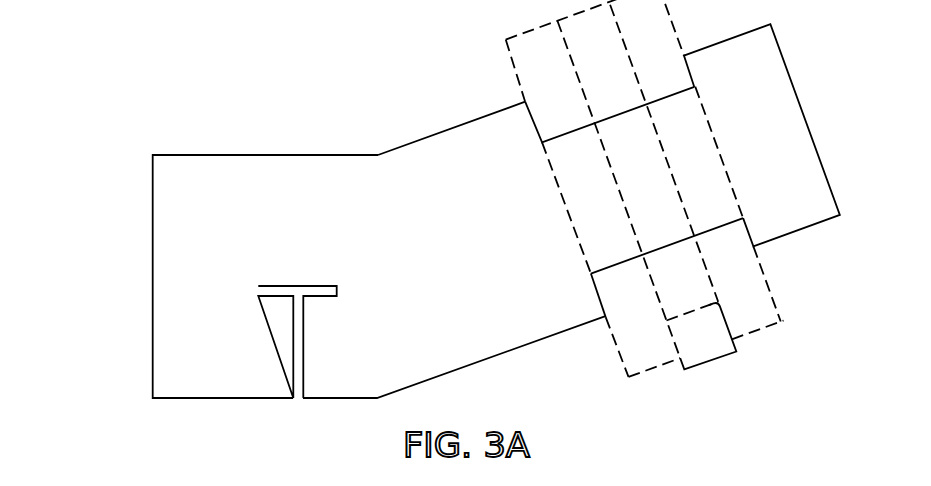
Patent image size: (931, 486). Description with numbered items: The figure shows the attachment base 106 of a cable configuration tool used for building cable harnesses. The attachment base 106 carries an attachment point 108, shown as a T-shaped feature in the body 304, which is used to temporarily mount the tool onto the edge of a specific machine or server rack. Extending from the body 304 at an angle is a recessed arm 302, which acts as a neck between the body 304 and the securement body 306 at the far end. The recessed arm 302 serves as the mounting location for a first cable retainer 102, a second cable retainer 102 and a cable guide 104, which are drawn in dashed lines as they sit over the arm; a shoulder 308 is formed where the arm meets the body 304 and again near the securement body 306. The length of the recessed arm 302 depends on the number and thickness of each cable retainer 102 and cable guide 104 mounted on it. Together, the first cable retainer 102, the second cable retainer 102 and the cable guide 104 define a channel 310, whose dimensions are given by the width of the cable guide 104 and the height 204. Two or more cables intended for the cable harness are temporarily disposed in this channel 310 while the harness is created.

The cable retainer 102 is at (566, 72).
The cable guide 104 is at (622, 53).
The attachment base 106 is at (198, 85).
The attachment point 108 is at (298, 402).
The height 204 is at (737, 333).
The recessed arm 302 is at (668, 190).
The body 304 is at (430, 263).
The securement body 306 is at (787, 143).
The shoulder 308 is at (537, 130).
The channel 310 is at (712, 360).